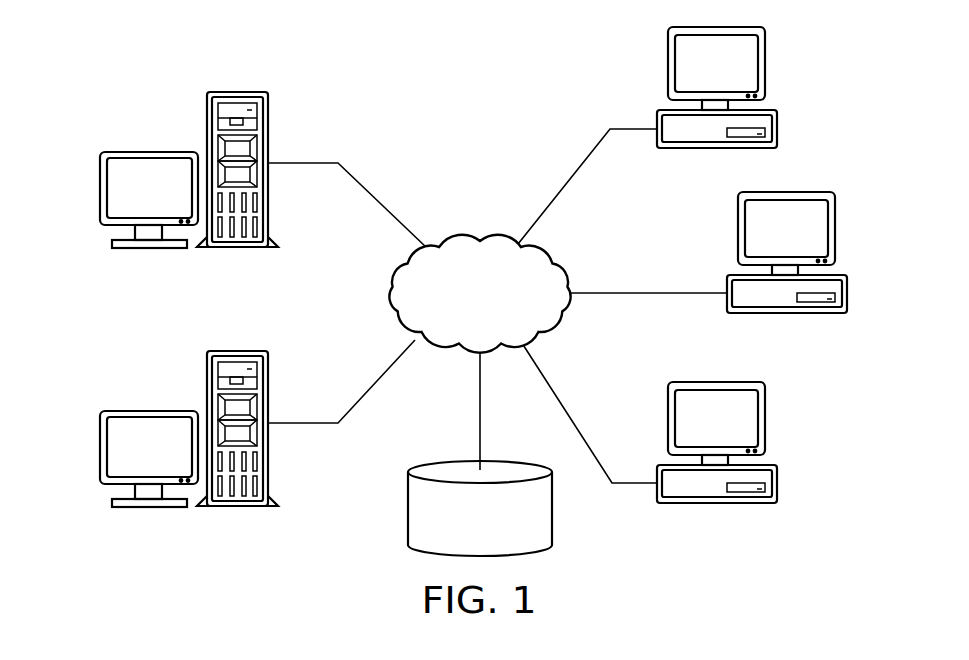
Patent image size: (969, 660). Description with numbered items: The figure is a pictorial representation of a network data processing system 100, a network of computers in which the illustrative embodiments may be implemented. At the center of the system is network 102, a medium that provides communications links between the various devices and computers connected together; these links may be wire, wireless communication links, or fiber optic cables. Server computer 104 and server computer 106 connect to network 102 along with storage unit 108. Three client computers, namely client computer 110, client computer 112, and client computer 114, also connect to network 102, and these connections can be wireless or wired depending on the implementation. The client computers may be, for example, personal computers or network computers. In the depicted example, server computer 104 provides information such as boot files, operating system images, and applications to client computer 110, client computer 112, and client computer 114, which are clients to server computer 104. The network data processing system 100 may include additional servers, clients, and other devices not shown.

The network data processing system 100 is at (341, 72).
The network 102 is at (456, 246).
The server computer 104 is at (100, 186).
The server computer 106 is at (100, 447).
The storage unit 108 is at (408, 506).
The client computer 110 is at (777, 128).
The client computer 112 is at (847, 305).
The client computer 114 is at (775, 492).